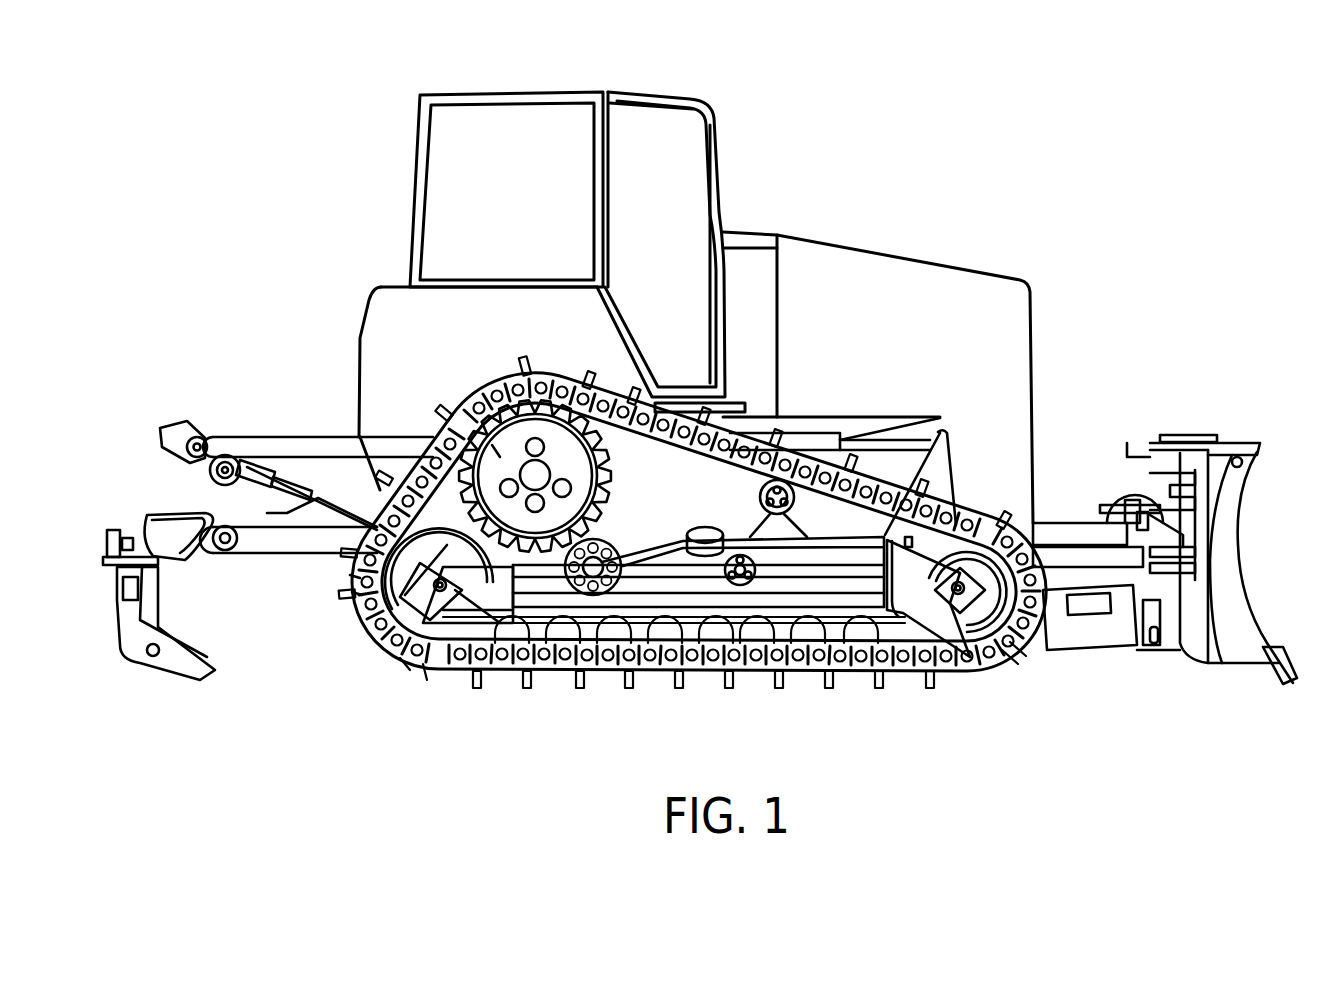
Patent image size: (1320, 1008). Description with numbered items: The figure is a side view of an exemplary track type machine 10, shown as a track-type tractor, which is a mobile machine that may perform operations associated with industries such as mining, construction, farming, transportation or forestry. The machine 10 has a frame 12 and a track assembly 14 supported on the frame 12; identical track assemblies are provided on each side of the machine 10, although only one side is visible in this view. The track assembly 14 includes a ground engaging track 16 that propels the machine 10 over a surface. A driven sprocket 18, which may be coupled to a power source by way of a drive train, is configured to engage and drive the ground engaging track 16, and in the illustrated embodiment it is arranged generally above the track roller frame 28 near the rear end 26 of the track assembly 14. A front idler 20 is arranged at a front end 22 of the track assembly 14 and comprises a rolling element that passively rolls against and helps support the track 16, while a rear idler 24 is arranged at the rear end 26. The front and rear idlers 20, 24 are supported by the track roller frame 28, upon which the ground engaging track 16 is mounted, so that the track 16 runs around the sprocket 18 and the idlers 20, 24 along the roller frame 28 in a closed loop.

The machine 10 is at (882, 196).
The frame 12 is at (357, 396).
The track assembly 14 is at (332, 640).
The ground engaging track 16 is at (587, 683).
The driven sprocket 18 is at (468, 414).
The front idler 20 is at (983, 627).
The front end 22 is at (1037, 523).
The rear idler 24 is at (400, 597).
The rear end 26 is at (348, 590).
The track roller frame 28 is at (796, 575).